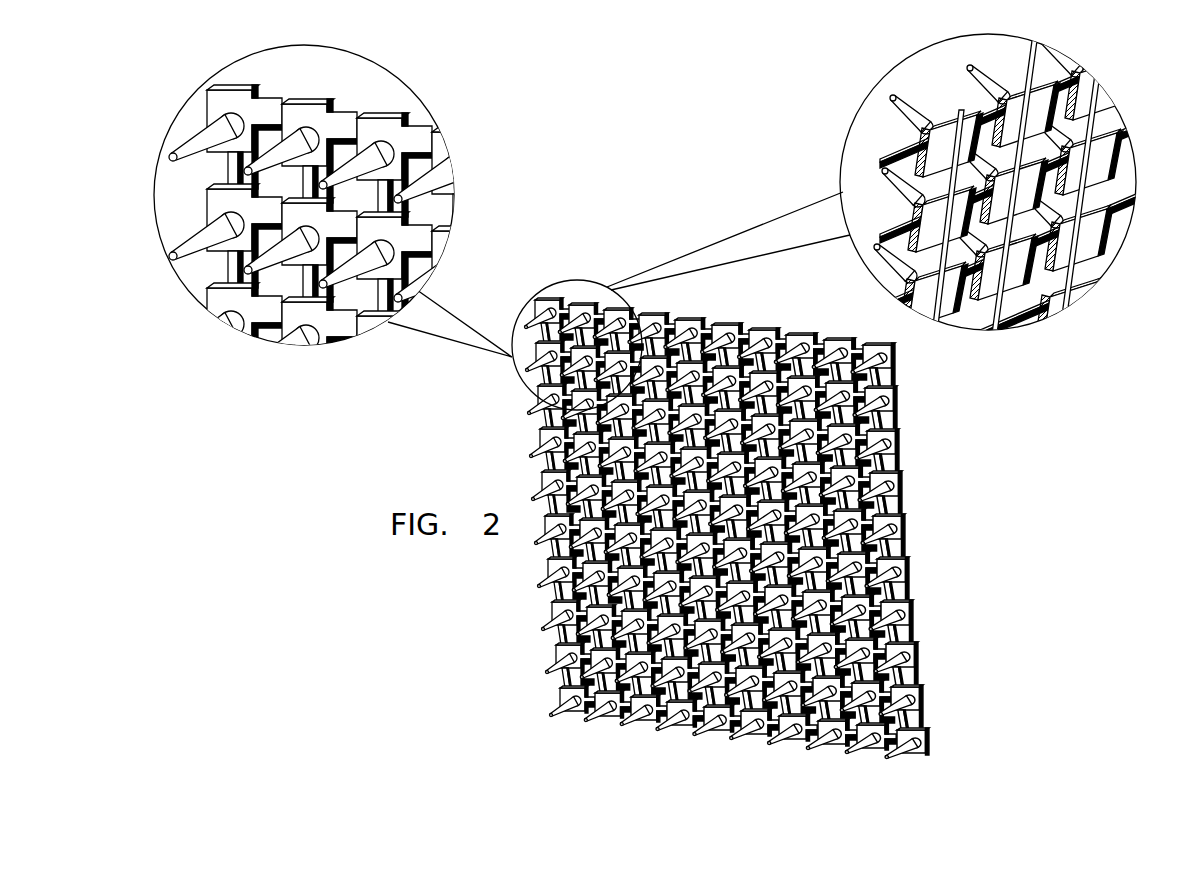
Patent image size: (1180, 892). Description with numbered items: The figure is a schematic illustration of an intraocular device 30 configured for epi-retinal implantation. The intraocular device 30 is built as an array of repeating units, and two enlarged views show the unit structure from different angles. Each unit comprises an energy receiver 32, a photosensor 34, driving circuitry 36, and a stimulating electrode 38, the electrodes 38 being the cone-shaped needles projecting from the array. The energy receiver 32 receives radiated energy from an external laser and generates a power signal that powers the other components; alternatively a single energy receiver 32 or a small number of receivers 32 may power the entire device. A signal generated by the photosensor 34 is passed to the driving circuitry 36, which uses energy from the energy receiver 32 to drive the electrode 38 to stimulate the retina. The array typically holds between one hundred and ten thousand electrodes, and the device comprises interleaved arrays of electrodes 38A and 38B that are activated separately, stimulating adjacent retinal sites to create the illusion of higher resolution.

The intraocular device 30 is at (937, 343).
The energy receiver 32 is at (1030, 76).
The photosensor 34 is at (1012, 108).
The driving circuitry 36 is at (912, 222).
The stimulating electrode 38 is at (202, 143).
The interleaved array of electrodes 38A is at (552, 716).
The interleaved array of electrodes 38B is at (596, 744).